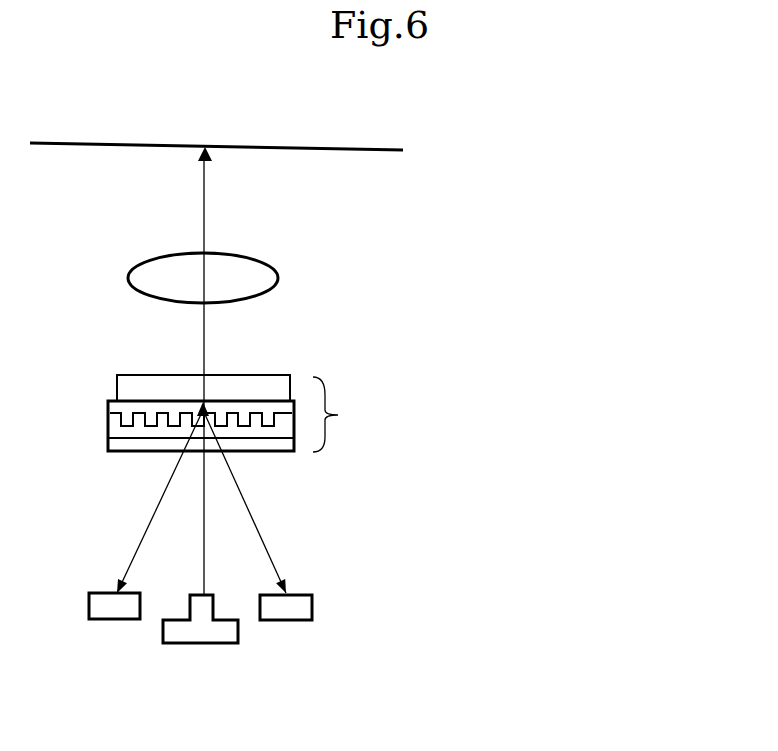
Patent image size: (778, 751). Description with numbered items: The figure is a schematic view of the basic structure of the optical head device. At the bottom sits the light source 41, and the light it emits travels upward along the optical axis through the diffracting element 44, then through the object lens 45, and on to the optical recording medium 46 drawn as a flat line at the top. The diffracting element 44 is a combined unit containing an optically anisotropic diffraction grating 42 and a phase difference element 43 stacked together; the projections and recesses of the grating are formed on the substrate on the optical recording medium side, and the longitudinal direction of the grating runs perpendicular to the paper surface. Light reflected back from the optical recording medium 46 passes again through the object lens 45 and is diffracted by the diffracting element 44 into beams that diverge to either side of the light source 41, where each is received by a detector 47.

The light source 41 is at (200, 645).
The optically anisotropic diffraction grating 42 is at (262, 455).
The phase difference element 43 is at (290, 375).
The diffracting element 44 is at (388, 438).
The object lens 45 is at (265, 262).
The optical recording medium 46 is at (303, 144).
The detector 47 is at (312, 609).